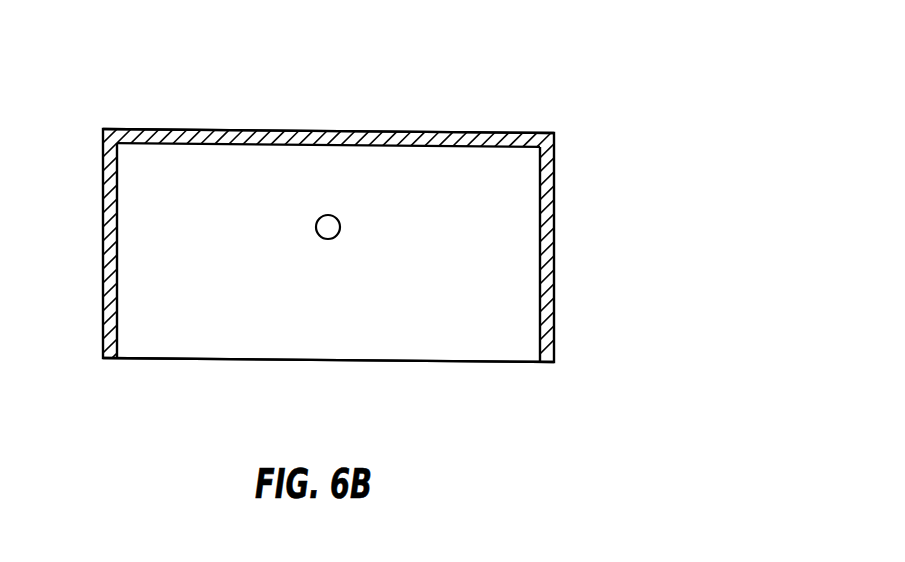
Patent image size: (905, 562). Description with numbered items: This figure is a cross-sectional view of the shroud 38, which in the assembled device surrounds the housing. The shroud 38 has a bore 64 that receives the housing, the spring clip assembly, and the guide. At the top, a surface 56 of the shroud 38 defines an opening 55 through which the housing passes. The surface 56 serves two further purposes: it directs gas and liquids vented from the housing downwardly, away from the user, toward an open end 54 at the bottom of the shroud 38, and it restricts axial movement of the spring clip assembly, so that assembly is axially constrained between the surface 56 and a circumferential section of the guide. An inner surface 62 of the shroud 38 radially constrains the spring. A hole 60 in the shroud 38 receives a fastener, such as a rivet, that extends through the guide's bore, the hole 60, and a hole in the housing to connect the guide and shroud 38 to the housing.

The shroud 38 is at (676, 98).
The open end 54 is at (328, 385).
The opening 55 is at (328, 105).
The surface 56 is at (328, 170).
The hole 60 is at (360, 254).
The inner surface 62 is at (328, 252).
The bore 64 is at (224, 232).